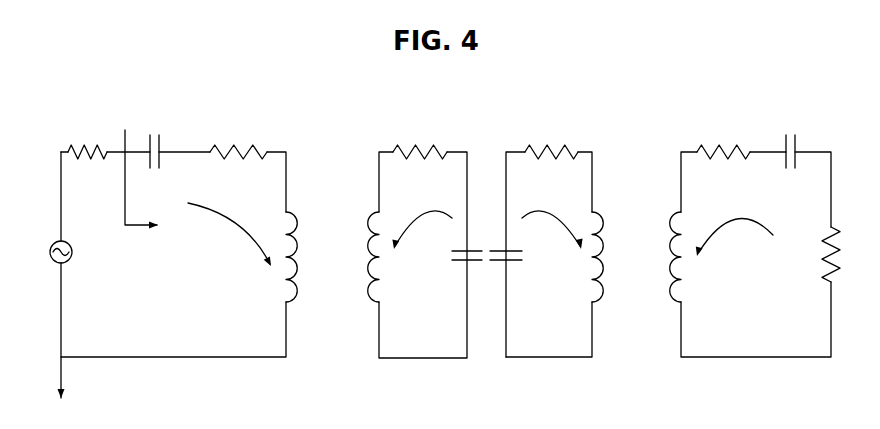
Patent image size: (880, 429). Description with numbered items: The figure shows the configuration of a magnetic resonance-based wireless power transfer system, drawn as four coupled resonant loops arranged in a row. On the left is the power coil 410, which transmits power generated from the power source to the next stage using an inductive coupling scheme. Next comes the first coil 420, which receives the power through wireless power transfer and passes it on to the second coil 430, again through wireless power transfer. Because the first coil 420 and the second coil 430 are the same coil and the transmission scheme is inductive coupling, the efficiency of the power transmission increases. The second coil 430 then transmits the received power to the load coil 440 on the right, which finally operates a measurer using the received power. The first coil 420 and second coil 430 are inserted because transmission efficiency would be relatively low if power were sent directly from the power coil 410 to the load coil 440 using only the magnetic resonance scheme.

The power coil 410 is at (177, 140).
The first coil 420 is at (407, 140).
The second coil 430 is at (537, 140).
The load coil 440 is at (731, 140).